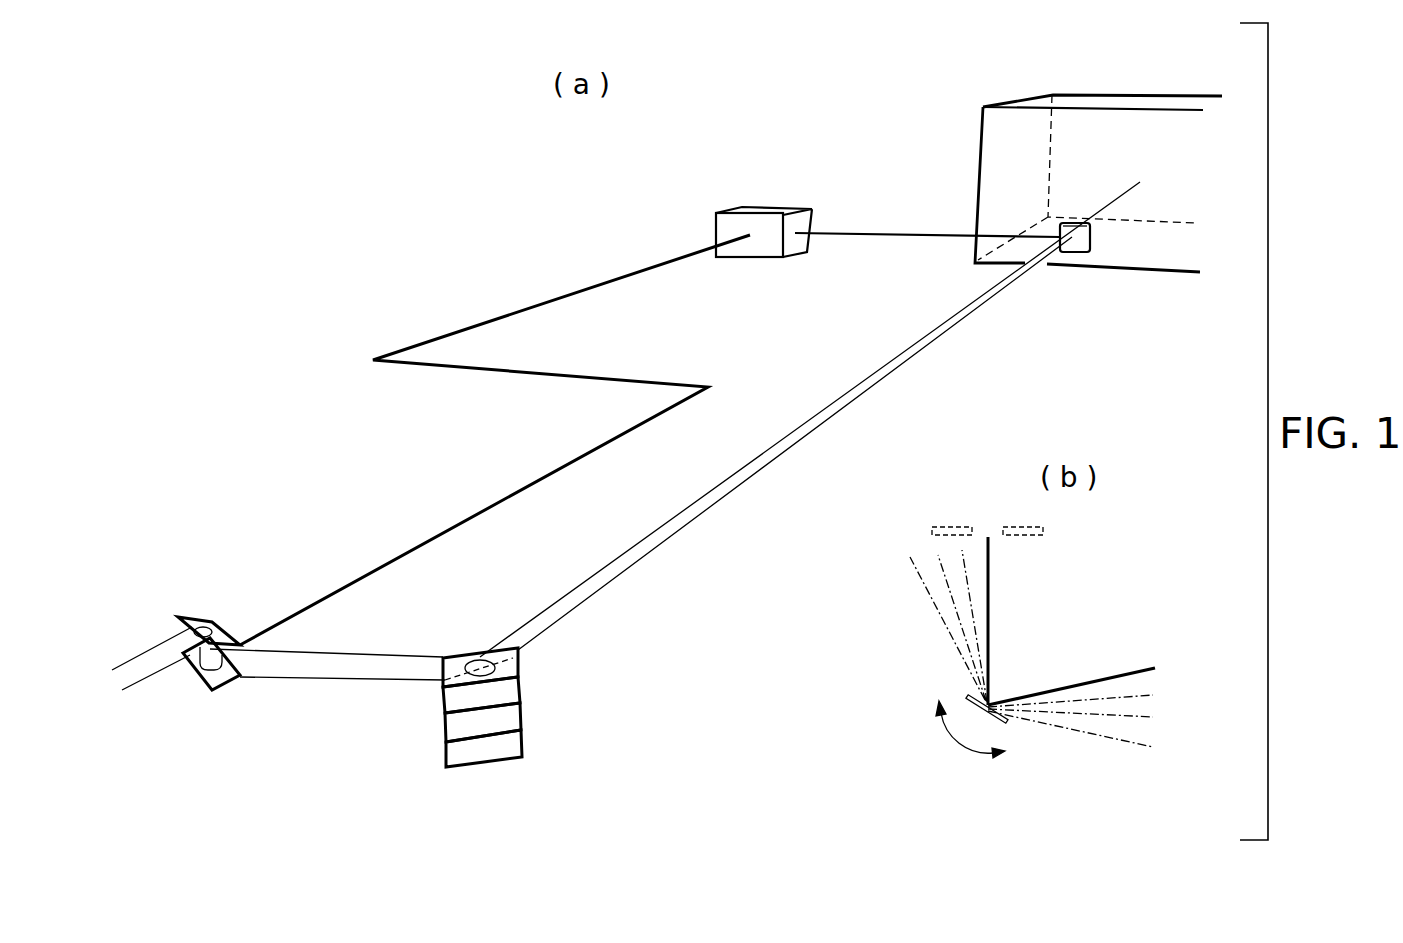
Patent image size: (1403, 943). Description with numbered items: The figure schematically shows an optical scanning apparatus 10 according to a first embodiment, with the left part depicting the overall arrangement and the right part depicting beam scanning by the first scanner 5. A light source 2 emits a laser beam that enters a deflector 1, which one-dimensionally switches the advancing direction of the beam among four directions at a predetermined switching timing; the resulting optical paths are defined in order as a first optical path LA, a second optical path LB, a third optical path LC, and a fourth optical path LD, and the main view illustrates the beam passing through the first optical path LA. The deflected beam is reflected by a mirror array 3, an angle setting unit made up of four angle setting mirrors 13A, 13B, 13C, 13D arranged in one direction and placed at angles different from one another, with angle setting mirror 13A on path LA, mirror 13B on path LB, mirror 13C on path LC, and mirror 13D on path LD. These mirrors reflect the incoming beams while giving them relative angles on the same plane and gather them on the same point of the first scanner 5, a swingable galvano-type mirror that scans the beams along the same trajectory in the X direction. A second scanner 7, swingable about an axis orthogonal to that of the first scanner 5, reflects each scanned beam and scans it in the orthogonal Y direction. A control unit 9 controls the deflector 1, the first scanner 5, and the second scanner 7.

The deflector 1 is at (1073, 260).
The light source 2 is at (983, 130).
The mirror array 3 is at (483, 738).
The first scanner 5 is at (198, 683).
The second scanner 7 is at (190, 616).
The control unit 9 is at (768, 208).
The optical scanning apparatus 10 is at (775, 704).
The angle setting mirror 13A is at (520, 660).
The angle setting mirror 13B is at (443, 695).
The angle setting mirror 13C is at (521, 710).
The angle setting mirror 13D is at (444, 750).
The first optical path LA is at (632, 562).
The second optical path LB is at (1140, 695).
The third optical path LC is at (1140, 717).
The fourth optical path LD is at (1107, 733).